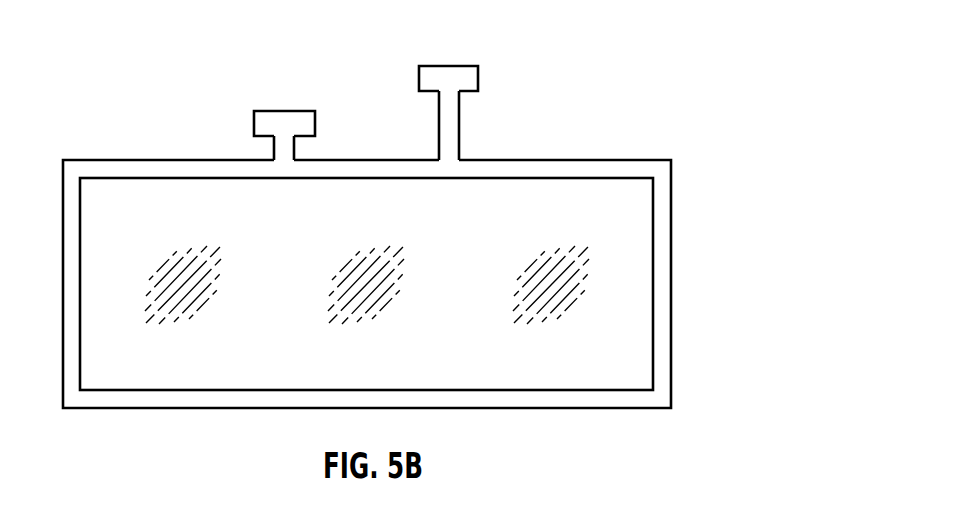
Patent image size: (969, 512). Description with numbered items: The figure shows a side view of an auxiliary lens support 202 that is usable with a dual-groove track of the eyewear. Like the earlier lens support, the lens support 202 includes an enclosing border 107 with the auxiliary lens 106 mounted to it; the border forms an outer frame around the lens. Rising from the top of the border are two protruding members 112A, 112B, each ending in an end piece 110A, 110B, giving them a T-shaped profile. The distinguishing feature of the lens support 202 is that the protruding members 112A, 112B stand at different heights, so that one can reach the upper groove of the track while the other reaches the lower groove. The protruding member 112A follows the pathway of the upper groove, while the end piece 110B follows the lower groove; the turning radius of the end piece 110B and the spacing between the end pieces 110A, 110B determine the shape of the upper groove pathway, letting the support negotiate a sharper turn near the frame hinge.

The auxiliary lens support 202 is at (122, 99).
The auxiliary lens 106 is at (189, 187).
The enclosing border 107 is at (598, 167).
The end piece 110A is at (448, 65).
The end piece 110B is at (280, 120).
The protruding member 112A is at (461, 127).
The protruding member 112B is at (295, 157).